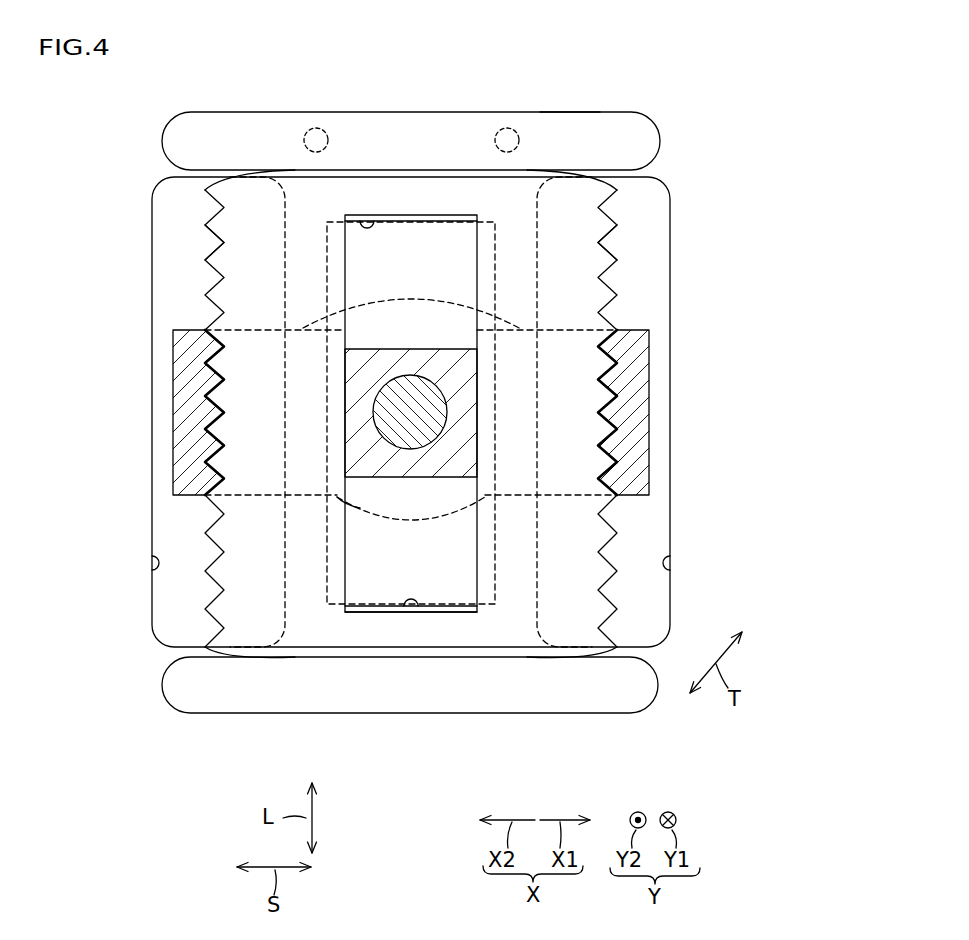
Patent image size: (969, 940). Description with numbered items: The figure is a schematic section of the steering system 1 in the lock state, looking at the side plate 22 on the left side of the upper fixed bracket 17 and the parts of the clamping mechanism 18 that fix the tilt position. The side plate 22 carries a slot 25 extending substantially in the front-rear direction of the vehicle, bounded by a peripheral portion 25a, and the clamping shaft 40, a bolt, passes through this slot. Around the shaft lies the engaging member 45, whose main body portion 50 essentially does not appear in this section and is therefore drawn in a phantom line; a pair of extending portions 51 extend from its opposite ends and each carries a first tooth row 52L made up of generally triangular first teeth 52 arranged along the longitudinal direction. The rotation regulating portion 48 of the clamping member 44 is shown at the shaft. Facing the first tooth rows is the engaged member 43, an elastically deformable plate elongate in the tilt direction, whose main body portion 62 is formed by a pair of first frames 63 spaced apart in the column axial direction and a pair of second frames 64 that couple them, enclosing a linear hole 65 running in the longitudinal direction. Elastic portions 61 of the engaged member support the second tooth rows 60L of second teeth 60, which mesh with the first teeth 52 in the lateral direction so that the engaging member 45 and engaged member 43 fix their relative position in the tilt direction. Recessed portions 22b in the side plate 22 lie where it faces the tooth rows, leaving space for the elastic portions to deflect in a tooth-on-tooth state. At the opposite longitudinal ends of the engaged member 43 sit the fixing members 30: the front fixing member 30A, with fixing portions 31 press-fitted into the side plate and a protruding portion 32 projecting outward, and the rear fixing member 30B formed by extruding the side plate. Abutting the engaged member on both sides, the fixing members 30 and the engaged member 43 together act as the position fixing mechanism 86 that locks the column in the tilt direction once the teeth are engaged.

The steering system 1 is at (672, 112).
The upper fixed bracket 17 is at (705, 218).
The clamping mechanism 18 is at (406, 455).
The side plate 22 is at (693, 150).
The recessed portion 22b is at (155, 565).
The slot 25 is at (367, 221).
The peripheral portion 25a is at (312, 278).
The fixing member 30 is at (411, 410).
The front fixing member 30A is at (411, 110).
The rear fixing member 30B is at (578, 714).
The fixing portion 31 is at (318, 128).
The protruding portion 32 is at (565, 112).
The clamping shaft 40 is at (400, 440).
The engaged member 43 is at (468, 660).
The clamping member 44 is at (405, 345).
The engaging member 45 is at (404, 530).
The rotation regulating portion 48 is at (366, 470).
The main body portion 50 is at (340, 308).
The extending portion 51 is at (173, 372).
The first tooth 52 is at (208, 447).
The first tooth row 52L is at (218, 497).
The second tooth 60 is at (206, 260).
The second tooth row 60L is at (207, 188).
The elastic portion 61 is at (295, 222).
The main body portion 62 is at (421, 195).
The first frame 63 is at (345, 260).
The second frame 64 is at (465, 190).
The linear hole 65 is at (412, 606).
The position fixing mechanism 86 is at (411, 410).